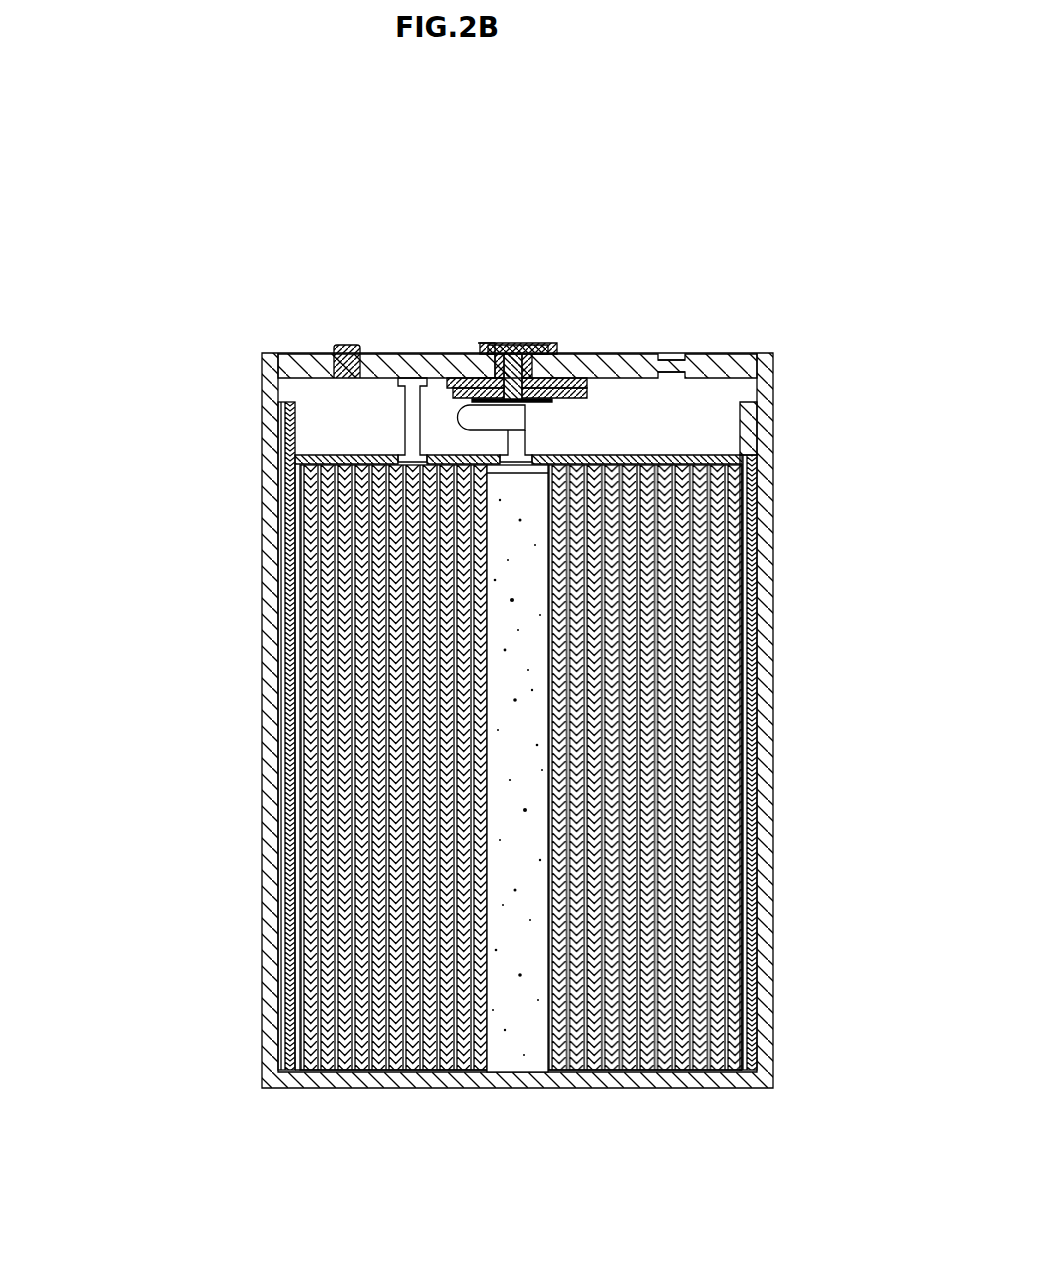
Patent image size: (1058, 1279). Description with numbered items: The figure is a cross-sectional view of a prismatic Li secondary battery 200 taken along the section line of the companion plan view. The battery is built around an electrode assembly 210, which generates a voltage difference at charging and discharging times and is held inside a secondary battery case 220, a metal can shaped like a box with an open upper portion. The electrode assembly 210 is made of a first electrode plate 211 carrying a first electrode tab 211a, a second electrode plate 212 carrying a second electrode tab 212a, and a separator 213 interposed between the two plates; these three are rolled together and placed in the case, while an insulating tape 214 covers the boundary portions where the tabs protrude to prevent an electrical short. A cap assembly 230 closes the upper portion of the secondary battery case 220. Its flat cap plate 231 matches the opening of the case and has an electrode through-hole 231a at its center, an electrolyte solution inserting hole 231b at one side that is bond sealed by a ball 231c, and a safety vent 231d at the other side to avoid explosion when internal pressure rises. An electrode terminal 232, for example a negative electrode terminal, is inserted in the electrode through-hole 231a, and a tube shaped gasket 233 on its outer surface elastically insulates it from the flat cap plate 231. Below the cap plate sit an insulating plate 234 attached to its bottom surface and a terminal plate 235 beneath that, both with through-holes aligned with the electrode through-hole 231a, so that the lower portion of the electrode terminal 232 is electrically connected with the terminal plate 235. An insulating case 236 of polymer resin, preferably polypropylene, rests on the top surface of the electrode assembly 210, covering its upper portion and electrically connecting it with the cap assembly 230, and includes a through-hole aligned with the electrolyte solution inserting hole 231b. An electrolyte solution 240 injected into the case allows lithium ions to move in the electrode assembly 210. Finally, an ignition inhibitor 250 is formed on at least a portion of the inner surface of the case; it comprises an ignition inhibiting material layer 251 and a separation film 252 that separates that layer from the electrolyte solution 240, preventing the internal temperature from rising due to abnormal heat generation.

The prismatic Li secondary battery 200 is at (838, 207).
The electrode assembly 210 is at (125, 410).
The first electrode plate 211 is at (280, 533).
The first electrode tab 211a is at (410, 407).
The second electrode plate 212 is at (312, 638).
The second electrode tab 212a is at (460, 418).
The separator 213 is at (290, 580).
The insulating tape 214 is at (393, 477).
The secondary battery case 220 is at (775, 630).
The cap assembly 230 is at (748, 198).
The flat cap plate 231 is at (418, 358).
The electrode through-hole 231a is at (470, 345).
The electrolyte solution inserting hole 231b is at (323, 358).
The ball 231c is at (350, 345).
The safety vent 231d is at (665, 357).
The electrode terminal 232 is at (516, 343).
The tube shaped gasket 233 is at (552, 348).
The insulating plate 234 is at (597, 385).
The terminal plate 235 is at (568, 392).
The insulating case 236 is at (736, 404).
The electrolyte solution 240 is at (520, 1045).
The ignition inhibitor 250 is at (140, 795).
The ignition inhibiting material layer 251 is at (280, 793).
The separation film 252 is at (280, 845).